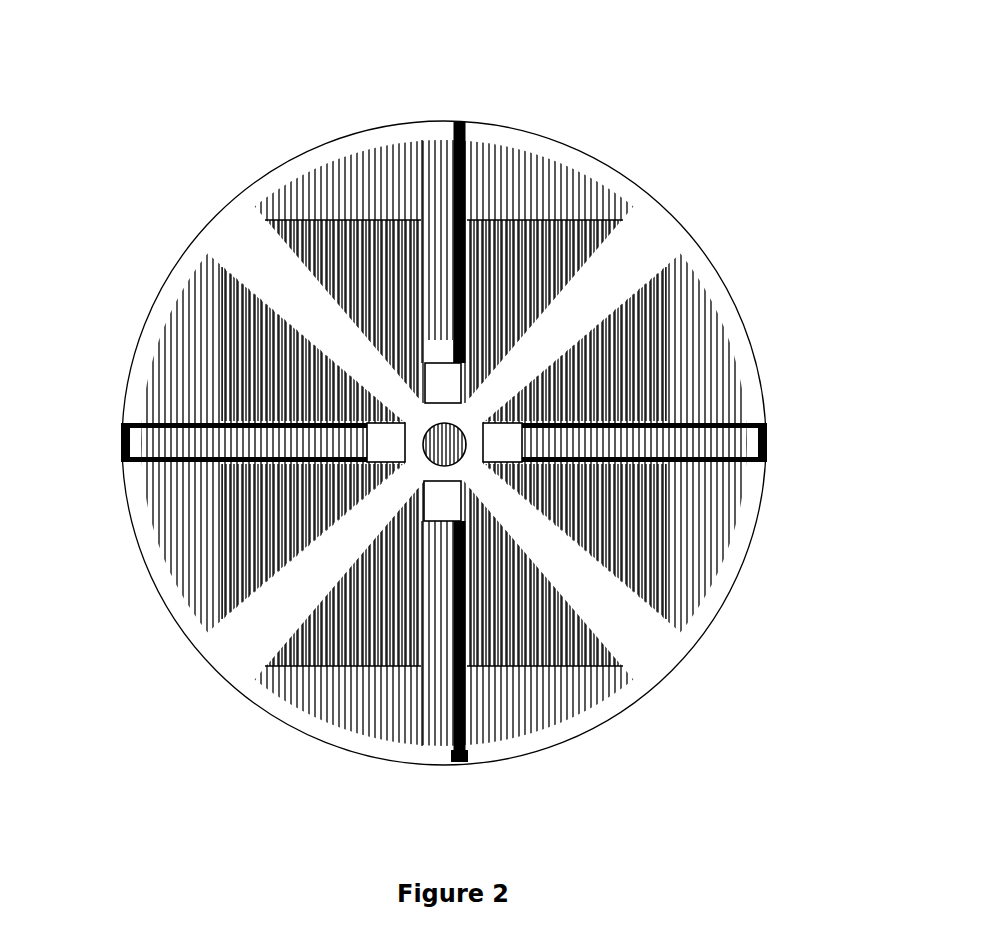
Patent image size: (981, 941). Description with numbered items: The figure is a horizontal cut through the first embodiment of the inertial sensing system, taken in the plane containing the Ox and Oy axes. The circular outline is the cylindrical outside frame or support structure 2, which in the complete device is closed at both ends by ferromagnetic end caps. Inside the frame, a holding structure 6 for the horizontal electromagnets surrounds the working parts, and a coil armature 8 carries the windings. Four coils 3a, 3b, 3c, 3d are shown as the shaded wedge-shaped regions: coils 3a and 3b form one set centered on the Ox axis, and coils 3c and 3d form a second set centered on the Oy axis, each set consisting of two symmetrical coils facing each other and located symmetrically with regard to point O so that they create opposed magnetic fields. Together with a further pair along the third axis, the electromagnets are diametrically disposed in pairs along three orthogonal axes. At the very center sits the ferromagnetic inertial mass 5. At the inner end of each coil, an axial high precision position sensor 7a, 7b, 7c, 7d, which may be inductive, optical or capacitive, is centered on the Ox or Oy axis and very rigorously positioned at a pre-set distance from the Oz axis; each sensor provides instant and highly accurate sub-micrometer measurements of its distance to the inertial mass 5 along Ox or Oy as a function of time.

The support structure 2 is at (172, 630).
The coil 3a is at (536, 612).
The coil 3b is at (363, 244).
The coil 3c is at (269, 337).
The coil 3d is at (612, 507).
The ferromagnetic inertial mass 5 is at (459, 428).
The holding structure for the horizontal electromagnets 6 is at (165, 544).
The high precision position sensor 7a is at (431, 511).
The high precision position sensor 7b is at (454, 361).
The high precision position sensor 7c is at (370, 435).
The high precision position sensor 7d is at (517, 431).
The coil armature 8 is at (433, 142).